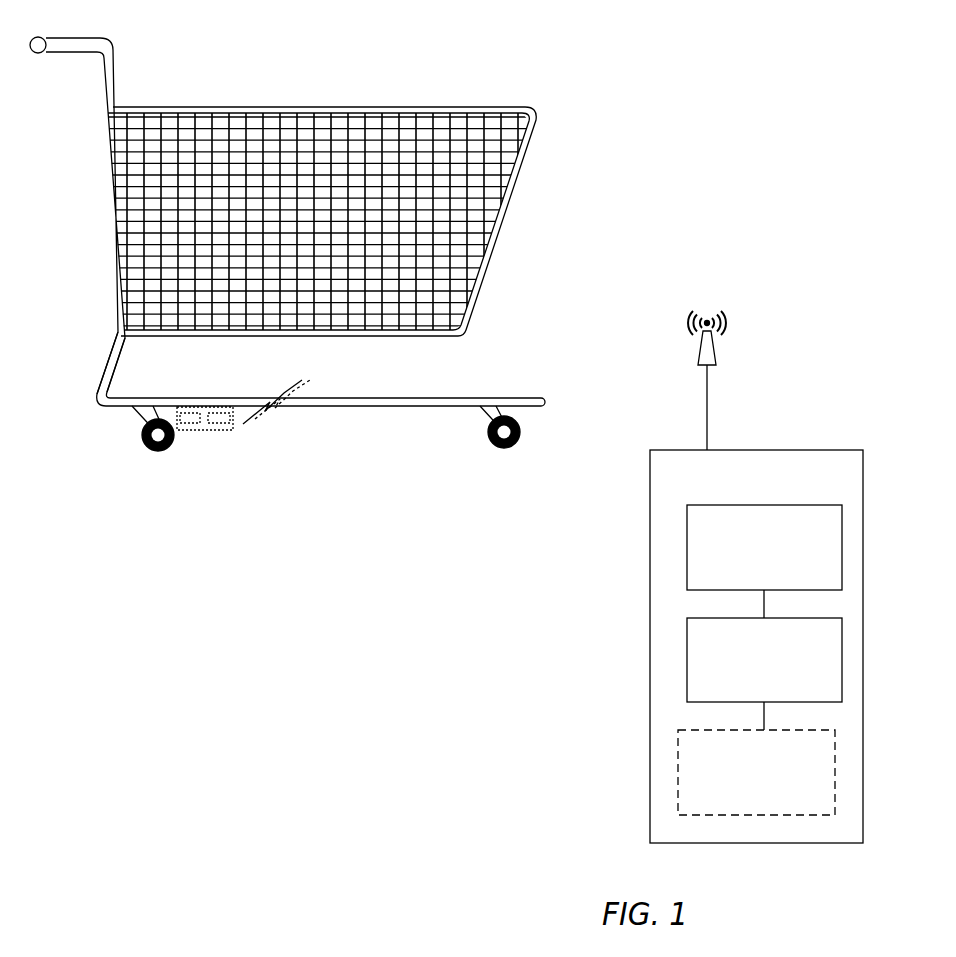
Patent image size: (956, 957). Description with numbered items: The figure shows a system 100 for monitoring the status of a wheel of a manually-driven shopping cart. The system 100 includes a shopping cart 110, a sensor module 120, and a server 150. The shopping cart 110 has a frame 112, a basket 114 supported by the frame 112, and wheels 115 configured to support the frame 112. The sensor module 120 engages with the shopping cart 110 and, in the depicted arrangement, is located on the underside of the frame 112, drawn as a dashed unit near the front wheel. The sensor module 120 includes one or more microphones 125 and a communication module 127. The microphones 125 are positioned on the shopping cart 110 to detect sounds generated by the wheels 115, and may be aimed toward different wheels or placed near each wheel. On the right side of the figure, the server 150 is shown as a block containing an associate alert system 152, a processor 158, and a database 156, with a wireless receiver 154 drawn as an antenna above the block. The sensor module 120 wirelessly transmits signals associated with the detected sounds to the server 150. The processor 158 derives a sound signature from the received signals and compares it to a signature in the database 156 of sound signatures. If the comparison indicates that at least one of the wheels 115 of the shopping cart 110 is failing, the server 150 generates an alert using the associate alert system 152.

The system 100 is at (224, 692).
The shopping cart 110 is at (287, 278).
The frame 112 is at (106, 360).
The basket 114 is at (410, 127).
The wheels 115 is at (156, 452).
The sensor module 120 is at (243, 468).
The microphones 125 is at (190, 428).
The communication module 127 is at (219, 428).
The server 150 is at (700, 577).
The associate alert system 152 is at (764, 547).
The wireless receiver 154 is at (748, 350).
The database 156 is at (756, 772).
The processor 158 is at (764, 660).